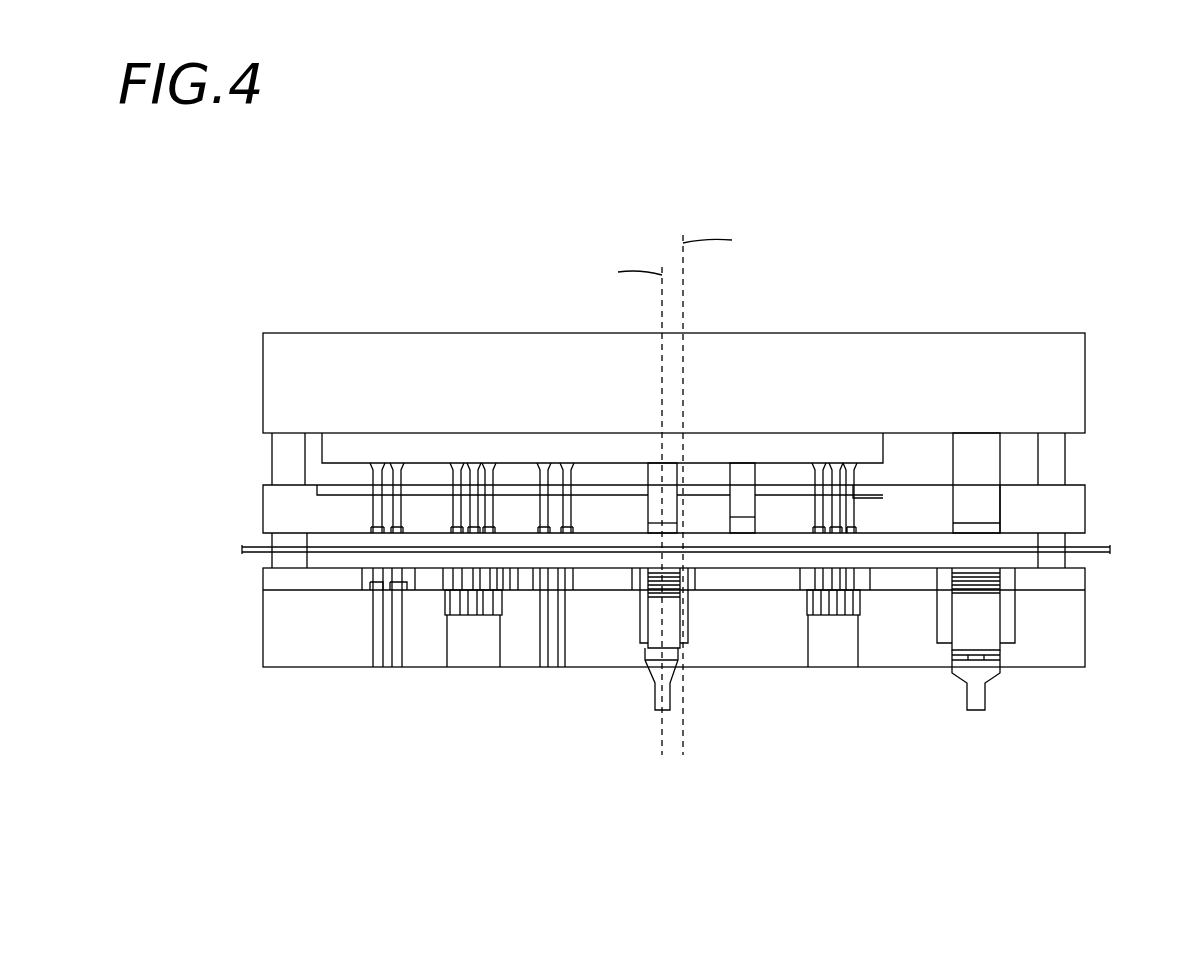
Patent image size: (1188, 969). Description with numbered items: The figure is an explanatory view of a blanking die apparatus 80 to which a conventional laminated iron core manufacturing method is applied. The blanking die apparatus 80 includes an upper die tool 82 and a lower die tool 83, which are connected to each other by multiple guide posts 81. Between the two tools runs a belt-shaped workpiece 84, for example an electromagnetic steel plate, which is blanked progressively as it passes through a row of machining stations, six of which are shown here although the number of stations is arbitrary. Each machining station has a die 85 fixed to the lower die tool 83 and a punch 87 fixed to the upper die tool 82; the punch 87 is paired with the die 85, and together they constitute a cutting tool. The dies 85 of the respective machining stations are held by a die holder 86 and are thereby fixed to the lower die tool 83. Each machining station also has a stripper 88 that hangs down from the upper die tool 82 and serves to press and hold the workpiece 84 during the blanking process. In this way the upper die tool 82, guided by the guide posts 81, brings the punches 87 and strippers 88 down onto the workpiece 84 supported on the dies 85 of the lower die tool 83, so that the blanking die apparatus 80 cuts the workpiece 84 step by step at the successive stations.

The blanking die apparatus 80 is at (305, 268).
The guide posts 81 is at (283, 456).
The upper die tool 82 is at (1047, 352).
The lower die tool 83 is at (285, 645).
The belt-shaped workpiece 84 is at (248, 553).
The die 85 is at (362, 579).
The die holder 86 is at (316, 578).
The punch 87 is at (368, 512).
The stripper 88 is at (1077, 508).